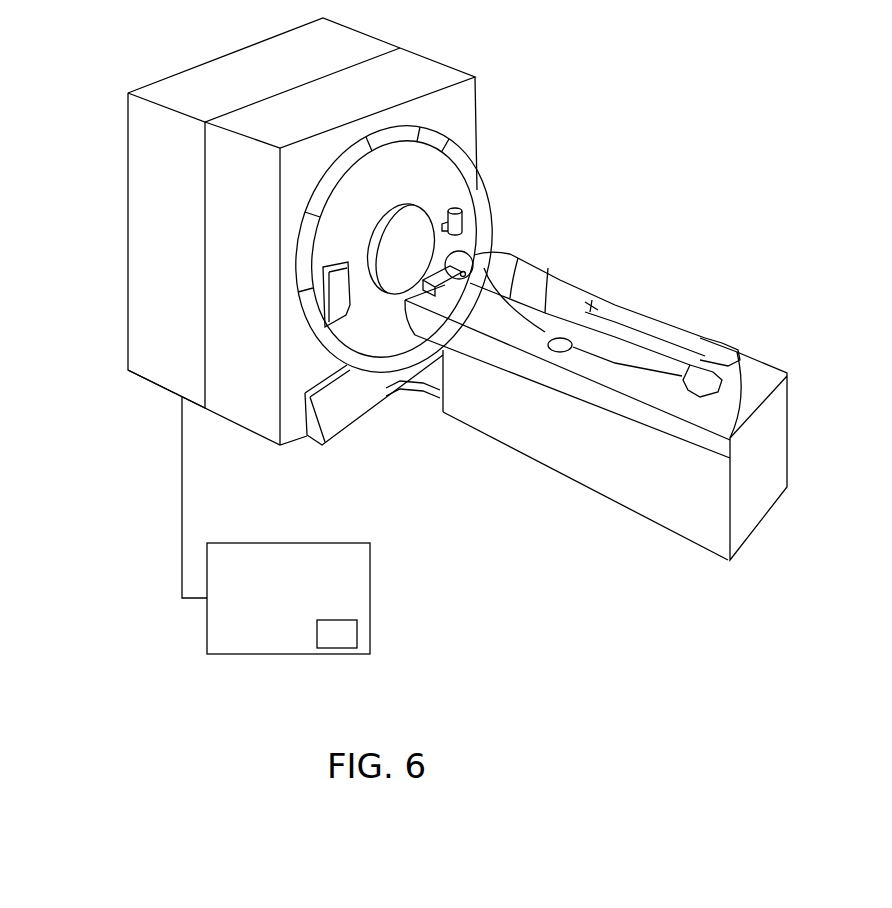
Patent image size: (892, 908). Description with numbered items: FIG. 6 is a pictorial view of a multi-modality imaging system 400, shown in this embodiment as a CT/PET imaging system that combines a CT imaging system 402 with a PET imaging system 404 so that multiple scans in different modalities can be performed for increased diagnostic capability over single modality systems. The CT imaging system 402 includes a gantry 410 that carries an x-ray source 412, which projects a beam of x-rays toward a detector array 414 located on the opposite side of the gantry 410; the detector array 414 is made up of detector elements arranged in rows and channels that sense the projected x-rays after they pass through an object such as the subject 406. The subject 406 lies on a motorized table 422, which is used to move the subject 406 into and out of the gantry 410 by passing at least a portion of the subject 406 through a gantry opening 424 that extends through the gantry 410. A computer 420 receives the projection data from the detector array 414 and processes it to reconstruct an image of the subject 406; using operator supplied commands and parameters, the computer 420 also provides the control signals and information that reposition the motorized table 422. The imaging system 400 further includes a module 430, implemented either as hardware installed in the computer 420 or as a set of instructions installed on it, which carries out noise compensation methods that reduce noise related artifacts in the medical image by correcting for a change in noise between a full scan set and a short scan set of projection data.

The multi-modality imaging system 400 is at (614, 59).
The CT imaging system 402 is at (238, 423).
The PET imaging system 404 is at (170, 383).
The subject 406 is at (560, 265).
The gantry 410 is at (467, 106).
The x-ray source 412 is at (466, 227).
The detector array 414 is at (321, 329).
The computer 420 is at (374, 581).
The motorized table 422 is at (558, 456).
The gantry opening 424 is at (417, 247).
The module 430 is at (343, 635).